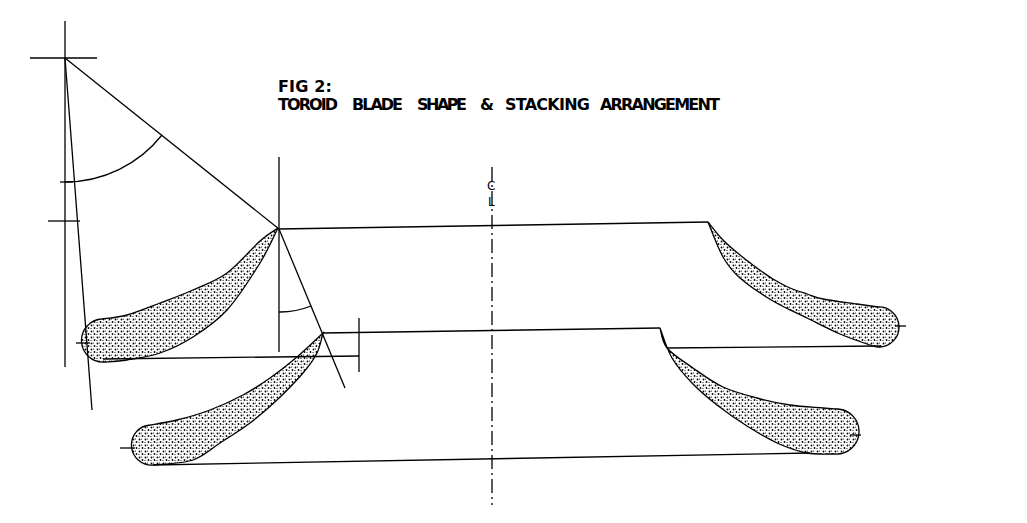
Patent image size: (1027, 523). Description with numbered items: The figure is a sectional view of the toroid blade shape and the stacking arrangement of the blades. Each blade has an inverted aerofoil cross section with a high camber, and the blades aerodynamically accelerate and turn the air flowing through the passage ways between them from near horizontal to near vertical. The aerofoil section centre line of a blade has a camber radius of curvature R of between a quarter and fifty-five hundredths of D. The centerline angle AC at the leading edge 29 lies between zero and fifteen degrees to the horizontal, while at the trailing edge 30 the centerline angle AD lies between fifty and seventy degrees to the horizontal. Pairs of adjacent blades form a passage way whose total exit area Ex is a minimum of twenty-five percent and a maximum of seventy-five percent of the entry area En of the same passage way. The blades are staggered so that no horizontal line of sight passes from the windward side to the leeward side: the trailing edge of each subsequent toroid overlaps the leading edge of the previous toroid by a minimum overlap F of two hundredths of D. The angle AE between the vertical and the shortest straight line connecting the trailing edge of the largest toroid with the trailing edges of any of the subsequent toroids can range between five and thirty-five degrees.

The leading edge 29 is at (61, 368).
The trailing edge 30 is at (215, 274).
The camber radius of curvature R is at (172, 143).
The trailing edge centerline angle AD is at (111, 159).
The leading edge centerline angle AC is at (81, 234).
The stacking angle AE is at (312, 308).
The overlap F is at (234, 355).
The exit area Ex is at (785, 284).
The entry area En is at (765, 391).